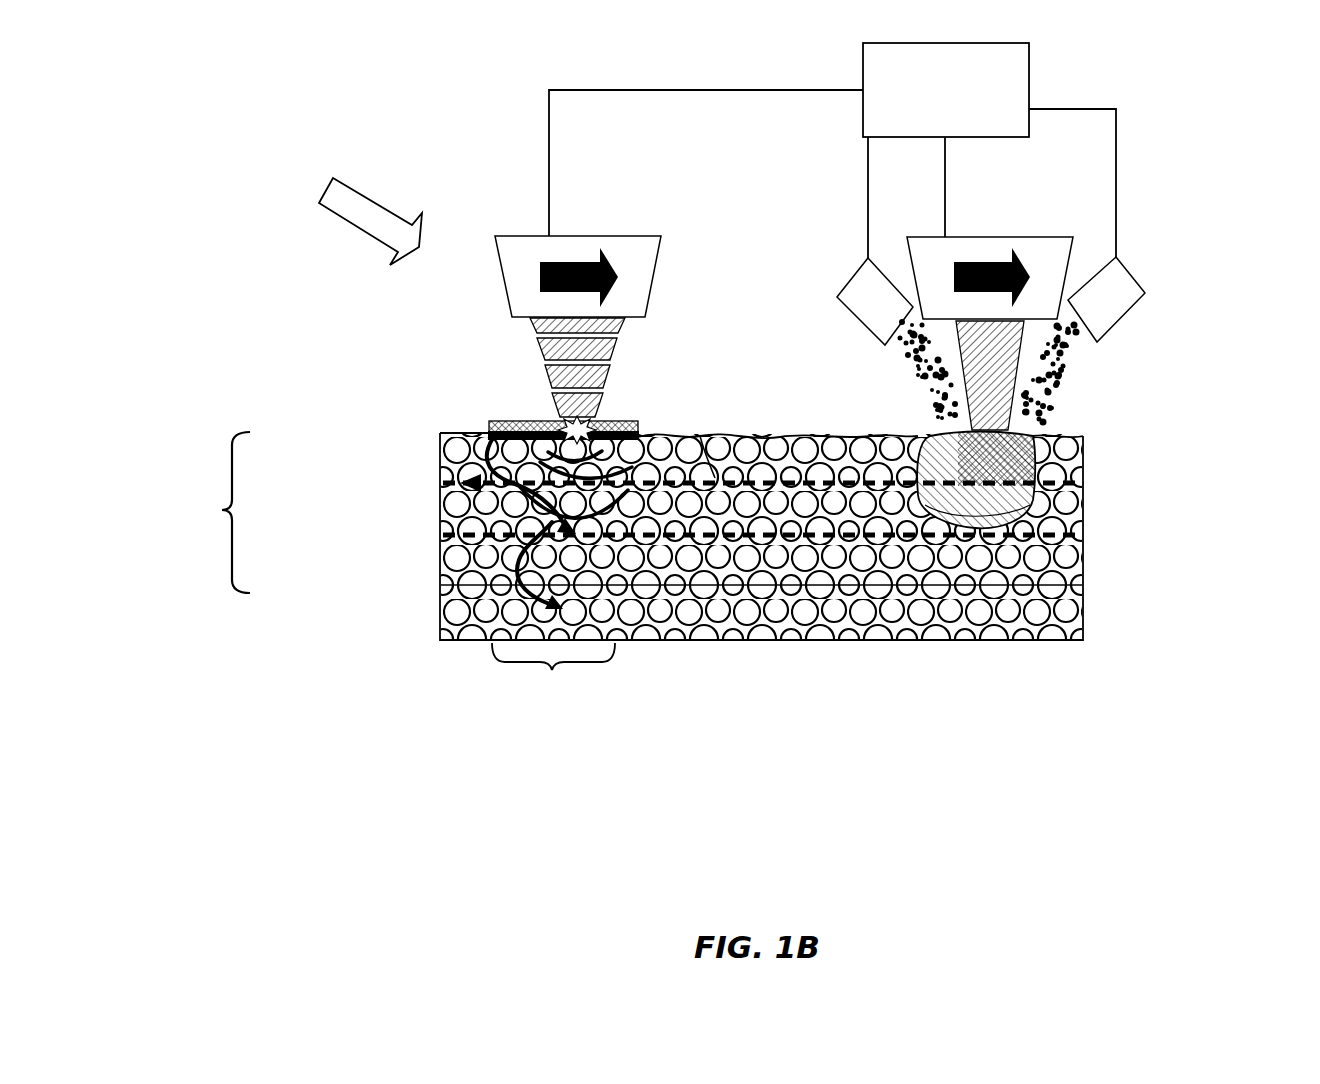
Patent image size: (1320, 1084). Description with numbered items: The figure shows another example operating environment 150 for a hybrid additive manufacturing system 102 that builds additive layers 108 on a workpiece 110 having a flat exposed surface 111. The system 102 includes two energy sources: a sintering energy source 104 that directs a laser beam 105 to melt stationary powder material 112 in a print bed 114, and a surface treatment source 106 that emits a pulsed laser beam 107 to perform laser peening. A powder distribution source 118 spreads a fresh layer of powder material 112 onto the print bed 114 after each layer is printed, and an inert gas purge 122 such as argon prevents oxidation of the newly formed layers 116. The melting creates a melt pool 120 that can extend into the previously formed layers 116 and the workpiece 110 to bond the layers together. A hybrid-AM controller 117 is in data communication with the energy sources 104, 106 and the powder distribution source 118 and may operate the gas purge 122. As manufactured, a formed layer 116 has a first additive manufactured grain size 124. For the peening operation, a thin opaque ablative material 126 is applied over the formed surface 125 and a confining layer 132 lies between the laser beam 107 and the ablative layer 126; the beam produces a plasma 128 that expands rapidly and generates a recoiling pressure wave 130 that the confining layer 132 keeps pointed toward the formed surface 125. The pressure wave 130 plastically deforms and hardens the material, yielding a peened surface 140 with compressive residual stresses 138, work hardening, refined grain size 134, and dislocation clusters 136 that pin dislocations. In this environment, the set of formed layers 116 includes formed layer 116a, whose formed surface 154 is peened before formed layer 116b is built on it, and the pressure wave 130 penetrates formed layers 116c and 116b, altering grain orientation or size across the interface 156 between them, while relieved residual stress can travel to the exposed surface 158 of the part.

The operating environment 150 is at (224, 115).
The inert gas purge 122 is at (382, 208).
The hybrid-AM controller 117 is at (930, 101).
The surface treatment source 106 is at (575, 236).
The pulsed laser beam 107 is at (607, 350).
The hybrid additive manufacturing system 102 is at (796, 194).
The sintering energy source 104 is at (993, 236).
The powder distribution source 118 is at (1128, 272).
The laser beam 105 is at (975, 363).
The powder material 112 is at (1067, 371).
The workpiece 110 is at (1023, 615).
The exposed surface 158 is at (443, 432).
The first additive manufactured grain size 124 is at (680, 433).
The formed surface 125 is at (715, 472).
The dislocation clusters 136 is at (441, 483).
The compressive residual stresses 138 is at (456, 497).
The flat exposed surface 111 is at (870, 585).
The confining layer 132 is at (510, 421).
The ablative material 126 is at (498, 432).
The plasma 128 is at (578, 427).
The pressure wave 130 is at (475, 548).
The print bed 114 is at (1013, 452).
The melt pool 120 is at (977, 503).
The formed layers 116 is at (1033, 483).
The formed layer 116a is at (456, 556).
The formed layer 116b is at (456, 510).
The formed layer 116c is at (456, 445).
The additive layers 108 is at (222, 510).
The peened surface 140 is at (552, 670).
The grain size 134 is at (665, 567).
The formed surface 154 is at (718, 535).
The interface 156 is at (797, 558).